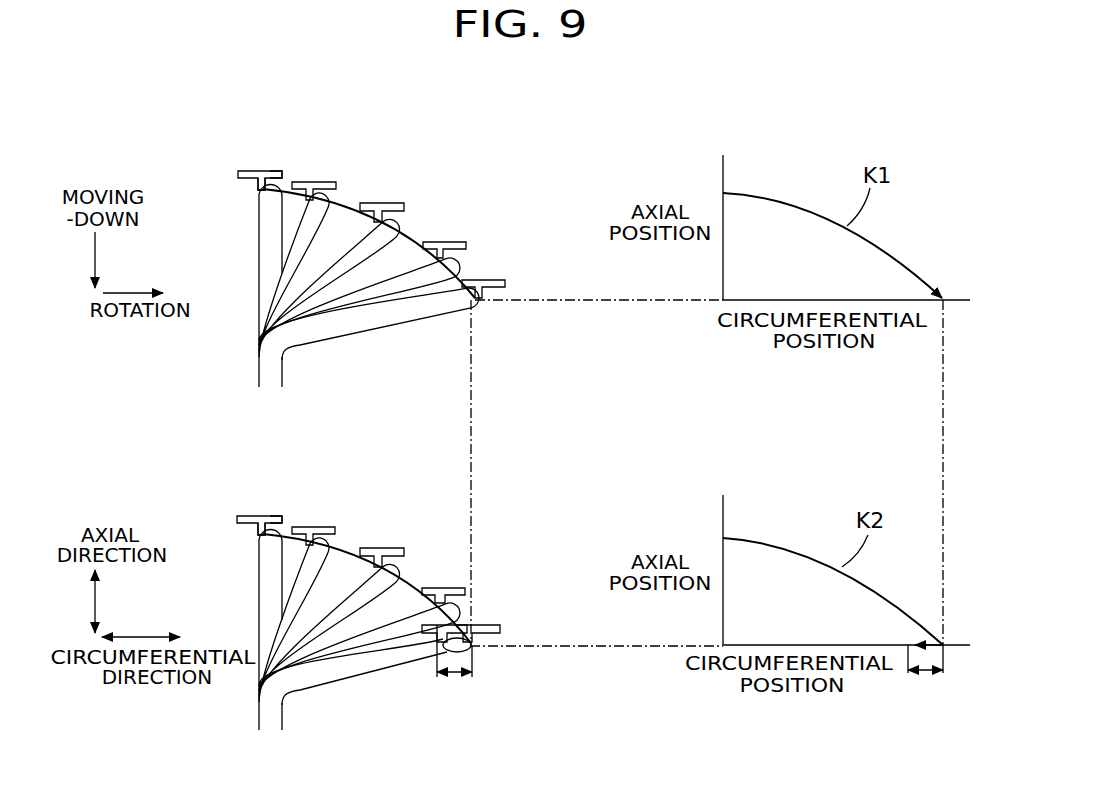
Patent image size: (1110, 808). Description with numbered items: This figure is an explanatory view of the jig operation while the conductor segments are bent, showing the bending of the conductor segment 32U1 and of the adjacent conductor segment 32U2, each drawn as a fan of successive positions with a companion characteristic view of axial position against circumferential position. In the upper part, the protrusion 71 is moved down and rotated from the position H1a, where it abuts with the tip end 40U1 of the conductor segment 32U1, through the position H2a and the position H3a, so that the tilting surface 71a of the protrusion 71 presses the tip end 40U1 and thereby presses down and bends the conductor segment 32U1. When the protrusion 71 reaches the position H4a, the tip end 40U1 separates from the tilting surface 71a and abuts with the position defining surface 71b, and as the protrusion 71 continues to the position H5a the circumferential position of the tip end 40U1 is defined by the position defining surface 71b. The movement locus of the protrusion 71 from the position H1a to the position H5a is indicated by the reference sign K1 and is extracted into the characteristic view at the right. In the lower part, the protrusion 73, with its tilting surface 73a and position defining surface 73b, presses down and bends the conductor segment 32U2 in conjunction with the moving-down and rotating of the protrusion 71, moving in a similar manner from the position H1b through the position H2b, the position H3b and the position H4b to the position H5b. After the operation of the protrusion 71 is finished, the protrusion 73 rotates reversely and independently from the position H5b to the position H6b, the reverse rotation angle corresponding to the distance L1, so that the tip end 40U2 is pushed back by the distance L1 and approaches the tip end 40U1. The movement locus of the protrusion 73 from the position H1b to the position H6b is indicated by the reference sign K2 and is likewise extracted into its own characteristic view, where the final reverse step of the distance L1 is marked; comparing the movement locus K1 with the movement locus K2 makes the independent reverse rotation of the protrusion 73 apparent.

The protrusion 71 is at (247, 170).
The tilting surface 71a is at (283, 176).
The position defining surface 71b is at (253, 187).
The tip end 40U1 is at (260, 197).
The conductor segment 32U1 is at (260, 262).
The position H1a is at (255, 142).
The position H2a is at (335, 172).
The position H3a is at (385, 193).
The position H4a is at (458, 237).
The position H5a is at (485, 272).
The movement locus K1 is at (413, 230).
The protrusion 73 is at (248, 515).
The tilting surface 73a is at (279, 525).
The position defining surface 73b is at (253, 537).
The tip end 40U2 is at (256, 542).
The conductor segment 32U2 is at (260, 603).
The position H1b is at (250, 493).
The position H2b is at (330, 520).
The position H3b is at (385, 542).
The position H4b is at (448, 580).
The position H5b is at (502, 620).
The position H6b is at (458, 620).
The movement locus K2 is at (410, 568).
The distance L1 is at (453, 677).